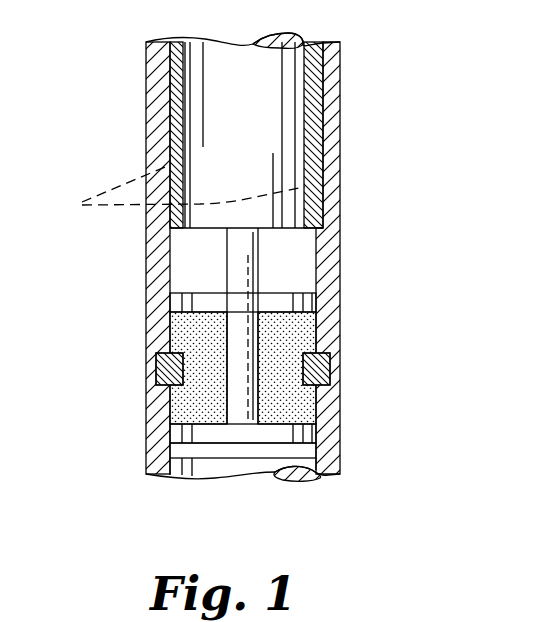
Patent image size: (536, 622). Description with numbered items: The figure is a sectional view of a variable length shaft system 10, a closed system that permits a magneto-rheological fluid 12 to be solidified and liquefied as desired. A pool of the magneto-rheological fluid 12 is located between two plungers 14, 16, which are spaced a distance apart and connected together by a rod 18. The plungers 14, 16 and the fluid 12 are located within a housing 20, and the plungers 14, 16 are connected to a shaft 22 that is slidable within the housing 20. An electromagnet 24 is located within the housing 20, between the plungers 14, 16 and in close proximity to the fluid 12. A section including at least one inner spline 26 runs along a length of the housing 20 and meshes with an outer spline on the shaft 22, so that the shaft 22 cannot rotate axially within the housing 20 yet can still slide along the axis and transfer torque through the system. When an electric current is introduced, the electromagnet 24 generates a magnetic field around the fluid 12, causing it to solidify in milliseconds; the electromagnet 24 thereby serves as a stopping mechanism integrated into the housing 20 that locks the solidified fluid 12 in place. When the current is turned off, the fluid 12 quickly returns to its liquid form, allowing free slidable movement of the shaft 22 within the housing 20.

The variable length shaft system 10 is at (360, 76).
The magneto-rheological fluid 12 is at (305, 333).
The plunger 14 is at (183, 304).
The plunger 16 is at (183, 433).
The rod 18 is at (245, 330).
The housing 20 is at (322, 245).
The shaft 22 is at (273, 132).
The electromagnet 24 is at (173, 370).
The inner spline 26 is at (179, 194).